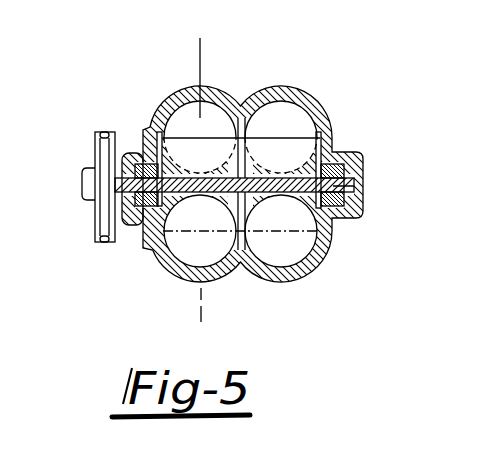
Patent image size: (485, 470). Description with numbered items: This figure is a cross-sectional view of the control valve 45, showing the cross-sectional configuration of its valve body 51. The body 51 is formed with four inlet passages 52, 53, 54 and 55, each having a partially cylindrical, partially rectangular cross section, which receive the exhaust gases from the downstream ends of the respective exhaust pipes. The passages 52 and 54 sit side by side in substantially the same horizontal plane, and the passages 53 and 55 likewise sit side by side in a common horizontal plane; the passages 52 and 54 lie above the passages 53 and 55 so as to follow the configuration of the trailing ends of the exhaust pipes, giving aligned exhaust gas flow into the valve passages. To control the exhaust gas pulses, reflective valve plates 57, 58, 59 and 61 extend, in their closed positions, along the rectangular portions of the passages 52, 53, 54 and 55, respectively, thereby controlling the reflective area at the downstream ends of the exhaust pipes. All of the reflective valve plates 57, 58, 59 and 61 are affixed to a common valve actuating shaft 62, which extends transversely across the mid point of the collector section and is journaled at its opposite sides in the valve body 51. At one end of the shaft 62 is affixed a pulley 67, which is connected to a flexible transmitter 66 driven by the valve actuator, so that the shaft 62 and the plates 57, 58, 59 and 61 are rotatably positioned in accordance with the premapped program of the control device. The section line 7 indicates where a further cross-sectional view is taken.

The control valve 45 is at (336, 91).
The valve body 51 is at (318, 270).
The inlet passage 52 is at (218, 116).
The inlet passage 53 is at (171, 276).
The inlet passage 54 is at (289, 110).
The inlet passage 55 is at (280, 262).
The reflective valve plate 57 is at (170, 136).
The reflective valve plate 58 is at (163, 258).
The reflective valve plate 59 is at (310, 125).
The reflective valve plate 61 is at (333, 243).
The valve actuating shaft 62 is at (364, 186).
The flexible transmitter 66 is at (102, 132).
The pulley 67 is at (98, 232).
The section line 7- 7 is at (195, 46).